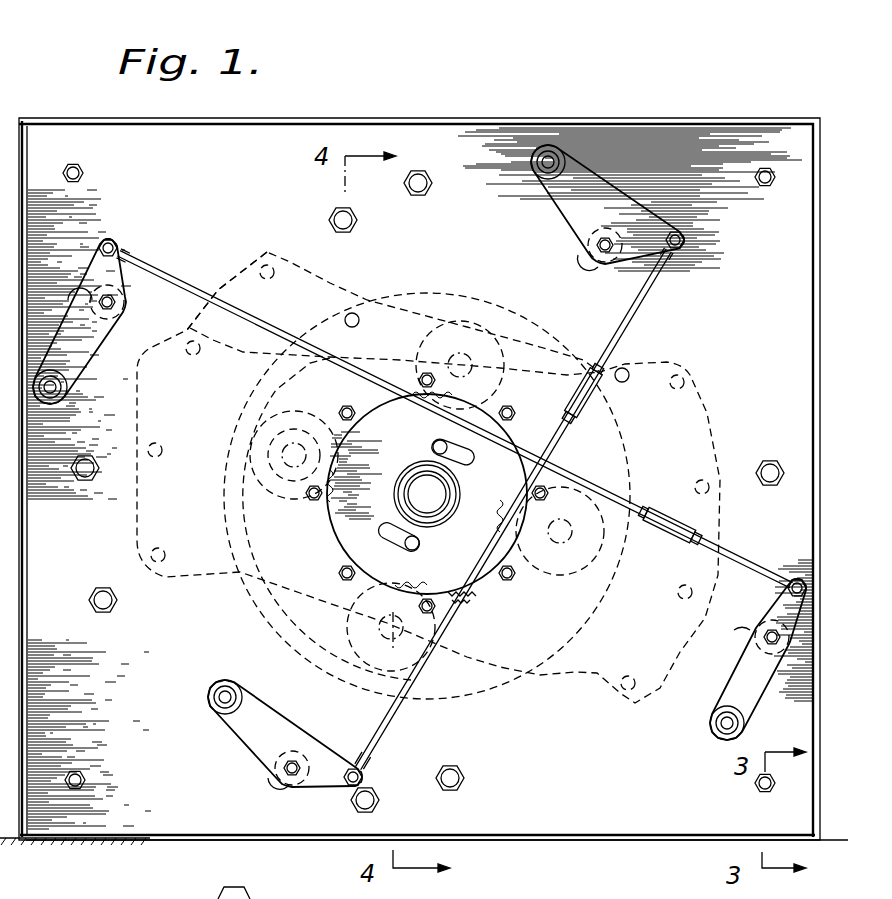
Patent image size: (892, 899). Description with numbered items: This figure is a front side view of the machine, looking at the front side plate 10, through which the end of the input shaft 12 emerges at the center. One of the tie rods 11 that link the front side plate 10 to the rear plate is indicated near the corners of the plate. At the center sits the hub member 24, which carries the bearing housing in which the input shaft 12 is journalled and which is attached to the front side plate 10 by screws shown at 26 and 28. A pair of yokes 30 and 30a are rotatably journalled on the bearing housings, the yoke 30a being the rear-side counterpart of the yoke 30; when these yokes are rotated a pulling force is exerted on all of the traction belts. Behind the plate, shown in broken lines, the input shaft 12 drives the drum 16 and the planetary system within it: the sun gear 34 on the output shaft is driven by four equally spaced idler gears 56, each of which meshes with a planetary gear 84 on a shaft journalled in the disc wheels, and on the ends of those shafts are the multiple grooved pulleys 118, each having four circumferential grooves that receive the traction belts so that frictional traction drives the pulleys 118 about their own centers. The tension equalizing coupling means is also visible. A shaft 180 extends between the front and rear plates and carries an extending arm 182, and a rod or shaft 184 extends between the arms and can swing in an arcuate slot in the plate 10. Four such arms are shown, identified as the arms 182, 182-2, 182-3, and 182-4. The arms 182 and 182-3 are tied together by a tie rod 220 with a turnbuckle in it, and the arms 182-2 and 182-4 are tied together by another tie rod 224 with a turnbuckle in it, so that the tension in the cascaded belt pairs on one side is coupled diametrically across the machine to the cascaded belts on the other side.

The front side plate 10 is at (787, 231).
The tie rod 11 is at (74, 167).
The input shaft 12 is at (433, 497).
The drum 16 is at (452, 290).
The hub member 24 is at (510, 433).
The screw 26 is at (340, 410).
The screw 28 is at (513, 584).
The yoke 30 is at (586, 683).
The yoke 30a is at (221, 290).
The sun gear 34 is at (352, 556).
The idler gear 56 is at (466, 604).
The planetary gear 84 is at (340, 576).
The multiple grooved pulley 118 is at (379, 650).
The shaft 180 is at (722, 728).
The arm 182 is at (736, 688).
The arm 182-2 is at (253, 728).
The arm 182-3 is at (80, 368).
The arm 182-4 is at (620, 200).
The rod or shaft 184 is at (765, 638).
The tie rod 220 is at (598, 482).
The tie rod 224 is at (641, 300).